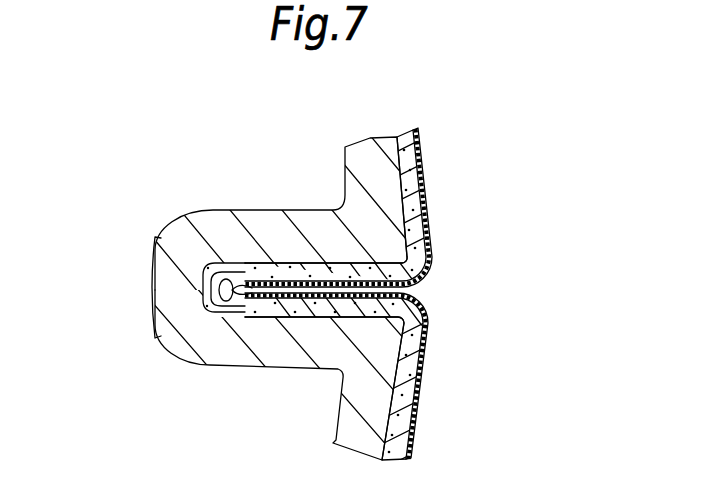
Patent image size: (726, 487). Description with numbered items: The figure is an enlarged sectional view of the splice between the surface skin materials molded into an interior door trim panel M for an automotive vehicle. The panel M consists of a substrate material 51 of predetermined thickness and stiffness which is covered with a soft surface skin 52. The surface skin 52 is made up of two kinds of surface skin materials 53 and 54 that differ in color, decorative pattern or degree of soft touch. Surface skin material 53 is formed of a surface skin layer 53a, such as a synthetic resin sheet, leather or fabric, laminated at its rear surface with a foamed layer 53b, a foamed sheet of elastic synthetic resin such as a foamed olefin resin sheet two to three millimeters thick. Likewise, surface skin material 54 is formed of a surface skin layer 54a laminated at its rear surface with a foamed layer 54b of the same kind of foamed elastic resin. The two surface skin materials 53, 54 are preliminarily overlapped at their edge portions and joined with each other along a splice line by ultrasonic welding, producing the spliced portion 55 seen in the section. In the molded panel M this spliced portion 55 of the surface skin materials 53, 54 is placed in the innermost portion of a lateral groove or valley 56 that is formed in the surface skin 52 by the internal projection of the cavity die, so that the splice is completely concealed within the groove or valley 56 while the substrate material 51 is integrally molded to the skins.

The substrate material 51 is at (280, 210).
The surface skin 52 is at (298, 375).
The surface skin material 53 is at (379, 281).
The surface skin layer 53a is at (375, 202).
The foamed layer 53b is at (345, 281).
The surface skin material 54 is at (380, 300).
The surface skin layer 54a is at (374, 379).
The foamed layer 54b is at (345, 300).
The spliced portion 55 is at (169, 287).
The groove or valley 56 is at (380, 287).
The interior door trim panel M is at (287, 295).